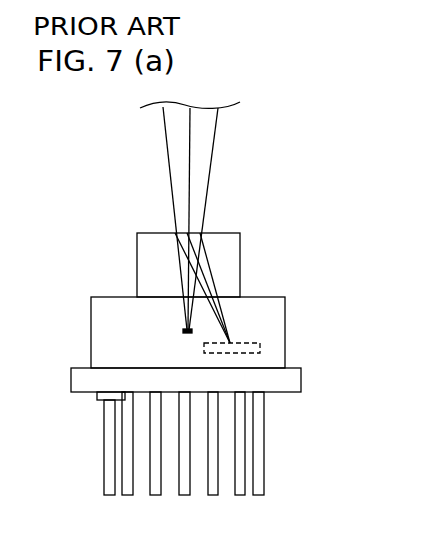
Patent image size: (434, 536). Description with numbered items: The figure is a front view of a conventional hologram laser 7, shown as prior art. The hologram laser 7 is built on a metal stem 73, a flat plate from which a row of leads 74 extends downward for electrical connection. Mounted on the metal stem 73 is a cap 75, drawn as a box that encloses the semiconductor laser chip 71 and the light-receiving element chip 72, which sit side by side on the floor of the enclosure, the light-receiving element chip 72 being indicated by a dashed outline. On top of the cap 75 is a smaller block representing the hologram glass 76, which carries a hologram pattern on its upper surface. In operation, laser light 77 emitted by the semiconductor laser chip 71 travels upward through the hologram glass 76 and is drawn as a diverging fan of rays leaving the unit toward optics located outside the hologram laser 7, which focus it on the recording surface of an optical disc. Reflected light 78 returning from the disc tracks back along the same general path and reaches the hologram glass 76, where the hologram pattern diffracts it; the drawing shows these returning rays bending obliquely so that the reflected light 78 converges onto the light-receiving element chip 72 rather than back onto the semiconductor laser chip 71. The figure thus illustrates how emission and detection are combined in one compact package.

The hologram laser 7 is at (306, 108).
The semiconductor laser chip 71 is at (183, 332).
The light-receiving element chip 72 is at (260, 348).
The metal stem 73 is at (297, 379).
The leads 74 is at (264, 448).
The cap 75 is at (277, 315).
The hologram glass 76 is at (236, 249).
The laser light 77 is at (193, 120).
The reflected light 78 is at (203, 252).